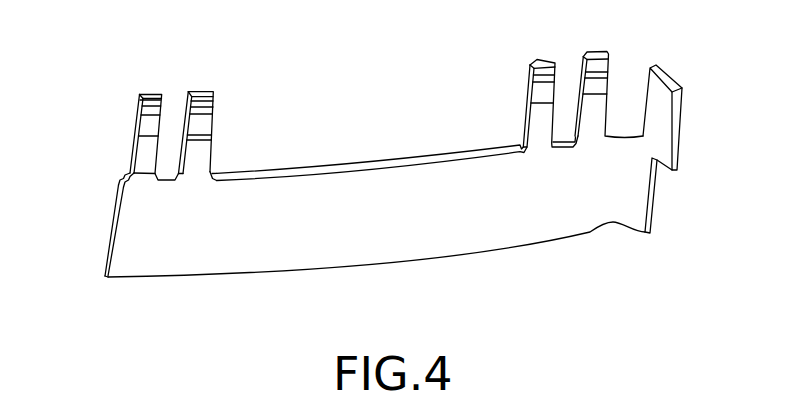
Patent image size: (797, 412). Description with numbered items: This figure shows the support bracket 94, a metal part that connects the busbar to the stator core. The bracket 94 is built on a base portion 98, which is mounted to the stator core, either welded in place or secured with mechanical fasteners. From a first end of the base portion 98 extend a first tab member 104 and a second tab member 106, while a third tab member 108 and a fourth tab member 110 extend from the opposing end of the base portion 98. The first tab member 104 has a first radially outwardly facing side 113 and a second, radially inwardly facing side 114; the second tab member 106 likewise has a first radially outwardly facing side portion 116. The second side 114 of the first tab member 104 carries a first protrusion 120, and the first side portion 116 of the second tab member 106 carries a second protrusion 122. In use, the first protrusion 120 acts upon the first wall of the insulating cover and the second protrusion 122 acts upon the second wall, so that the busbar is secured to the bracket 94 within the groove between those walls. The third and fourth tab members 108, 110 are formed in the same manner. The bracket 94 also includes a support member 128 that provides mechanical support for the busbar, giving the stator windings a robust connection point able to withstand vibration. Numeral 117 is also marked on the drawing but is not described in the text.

The bracket 94 is at (545, 253).
The base portion 98 is at (147, 243).
The first tab member 104 is at (103, 97).
The second tab member 106 is at (245, 95).
The third tab member 108 is at (528, 112).
The fourth tab member 110 is at (610, 88).
The first radially outwardly facing side 113 is at (145, 170).
The second radially inwardly facing side 114 is at (133, 128).
The first radially outwardly facing side portion 116 is at (200, 167).
The side edge of second tab 117 is at (183, 141).
The first protrusion 120 is at (147, 120).
The second protrusion 122 is at (203, 122).
The support member 128 is at (668, 122).